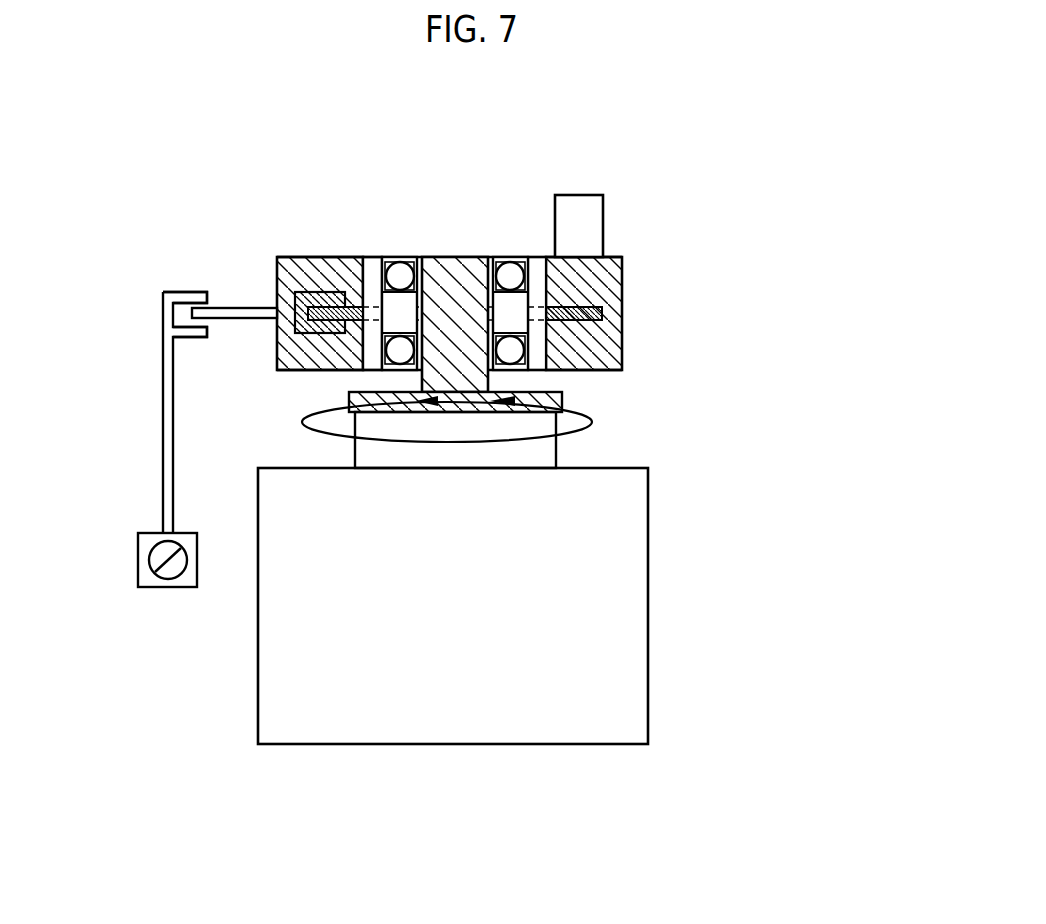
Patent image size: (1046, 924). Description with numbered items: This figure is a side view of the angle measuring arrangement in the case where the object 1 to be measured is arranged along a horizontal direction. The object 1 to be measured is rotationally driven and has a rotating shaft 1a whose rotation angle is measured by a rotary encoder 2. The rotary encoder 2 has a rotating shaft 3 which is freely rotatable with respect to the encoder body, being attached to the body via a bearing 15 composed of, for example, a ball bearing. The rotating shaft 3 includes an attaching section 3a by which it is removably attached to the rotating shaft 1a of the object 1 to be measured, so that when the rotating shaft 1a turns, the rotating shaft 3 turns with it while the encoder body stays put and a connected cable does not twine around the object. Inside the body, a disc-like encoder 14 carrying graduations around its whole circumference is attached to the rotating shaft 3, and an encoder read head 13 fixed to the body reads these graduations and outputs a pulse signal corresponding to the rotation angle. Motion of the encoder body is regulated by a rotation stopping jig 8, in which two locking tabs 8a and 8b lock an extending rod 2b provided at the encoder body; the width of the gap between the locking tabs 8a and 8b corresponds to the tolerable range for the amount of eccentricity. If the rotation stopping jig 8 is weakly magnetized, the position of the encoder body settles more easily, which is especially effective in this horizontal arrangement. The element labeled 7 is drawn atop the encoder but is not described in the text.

The object to be measured 1 is at (603, 596).
The rotating shaft of the object to be measured 1a is at (557, 451).
The rotary encoder 2 is at (722, 255).
The extending rod 2b is at (238, 308).
The rotating shaft 3 is at (465, 270).
The attaching section 3a is at (562, 400).
The sensor block 7 is at (575, 195).
The rotation stopping jig 8 is at (150, 468).
The locking tab 8a is at (187, 292).
The locking tab 8b is at (188, 337).
The encoder read head 13 is at (325, 292).
The encoder 14 is at (360, 290).
The bearing 15 is at (402, 263).